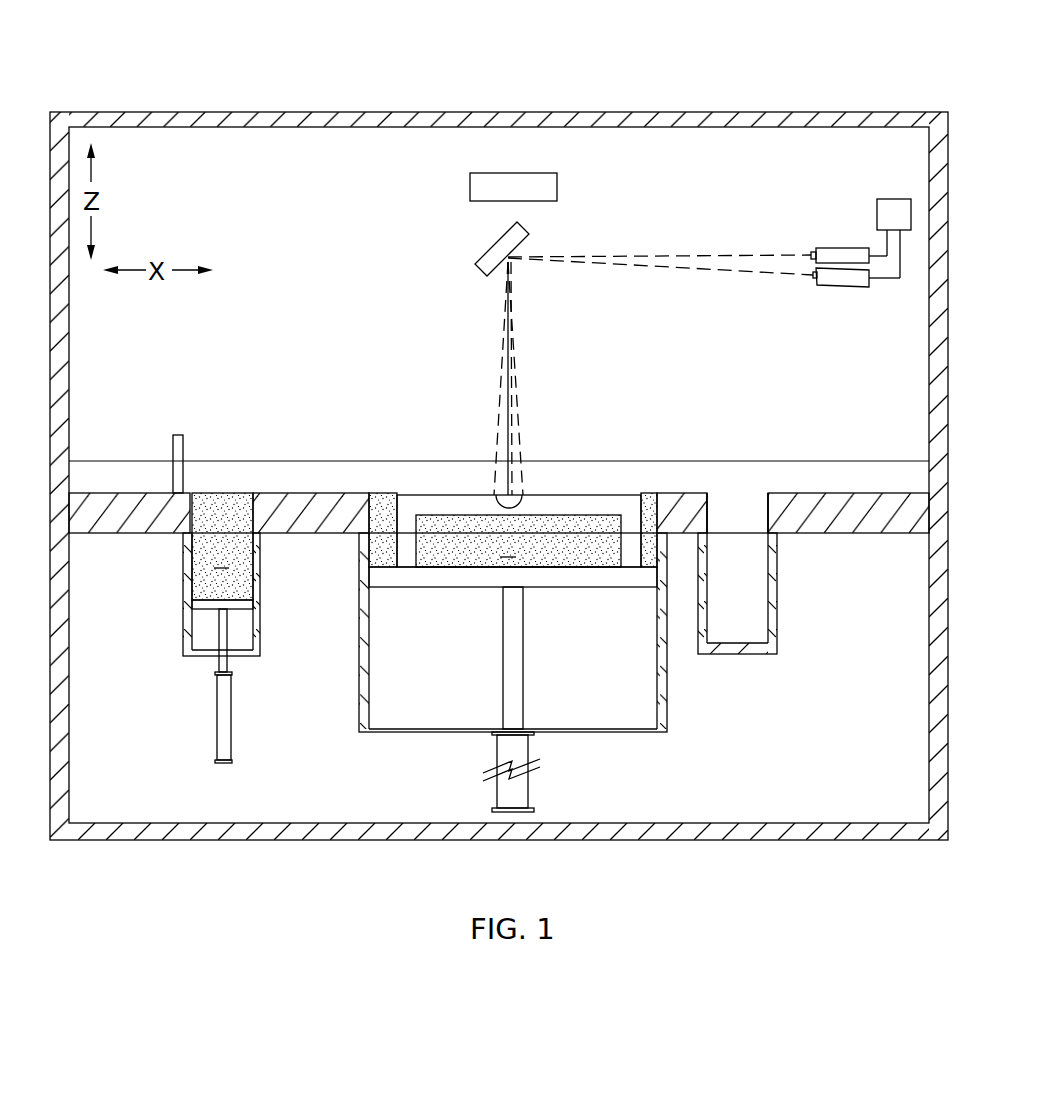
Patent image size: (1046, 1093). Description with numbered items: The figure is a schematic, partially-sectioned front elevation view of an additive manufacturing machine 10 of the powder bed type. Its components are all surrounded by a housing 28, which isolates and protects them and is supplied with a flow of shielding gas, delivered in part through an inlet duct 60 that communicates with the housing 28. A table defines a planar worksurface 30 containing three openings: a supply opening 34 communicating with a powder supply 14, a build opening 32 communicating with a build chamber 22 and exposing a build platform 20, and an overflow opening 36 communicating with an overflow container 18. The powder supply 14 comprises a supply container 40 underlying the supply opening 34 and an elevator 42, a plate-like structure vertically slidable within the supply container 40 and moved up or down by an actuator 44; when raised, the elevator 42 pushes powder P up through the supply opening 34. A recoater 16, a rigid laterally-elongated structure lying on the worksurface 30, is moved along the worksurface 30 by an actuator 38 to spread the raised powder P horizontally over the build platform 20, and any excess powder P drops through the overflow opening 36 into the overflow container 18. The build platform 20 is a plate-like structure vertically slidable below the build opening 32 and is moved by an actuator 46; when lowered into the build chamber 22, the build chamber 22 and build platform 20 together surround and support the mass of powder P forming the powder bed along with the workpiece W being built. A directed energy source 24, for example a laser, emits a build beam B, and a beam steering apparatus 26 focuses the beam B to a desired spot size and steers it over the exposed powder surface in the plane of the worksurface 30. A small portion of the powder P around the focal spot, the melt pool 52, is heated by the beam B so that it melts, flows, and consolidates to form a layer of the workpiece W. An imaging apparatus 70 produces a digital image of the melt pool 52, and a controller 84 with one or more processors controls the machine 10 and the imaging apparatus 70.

The additive manufacturing machine 10 is at (481, 62).
The powder supply 14 is at (208, 628).
The recoater 16 is at (176, 435).
The overflow container 18 is at (777, 619).
The build platform 20 is at (440, 578).
The build chamber 22 is at (667, 702).
The directed energy source 24 is at (823, 253).
The beam steering apparatus 26 is at (498, 245).
The housing 28 is at (345, 132).
The worksurface 30 is at (817, 487).
The build opening 32 is at (657, 510).
The supply opening 34 is at (190, 518).
The overflow opening 36 is at (767, 508).
The actuator 38 is at (107, 467).
The supply container 40 is at (257, 597).
The elevator 42 is at (240, 606).
The actuator 44 is at (226, 717).
The actuator 46 is at (520, 678).
The melt pool 52 is at (520, 497).
The inlet duct 60 is at (523, 178).
The imaging apparatus 70 is at (840, 278).
The controller 84 is at (898, 208).
The build beam B is at (518, 366).
The workpiece W is at (627, 510).
The powder P is at (222, 554).